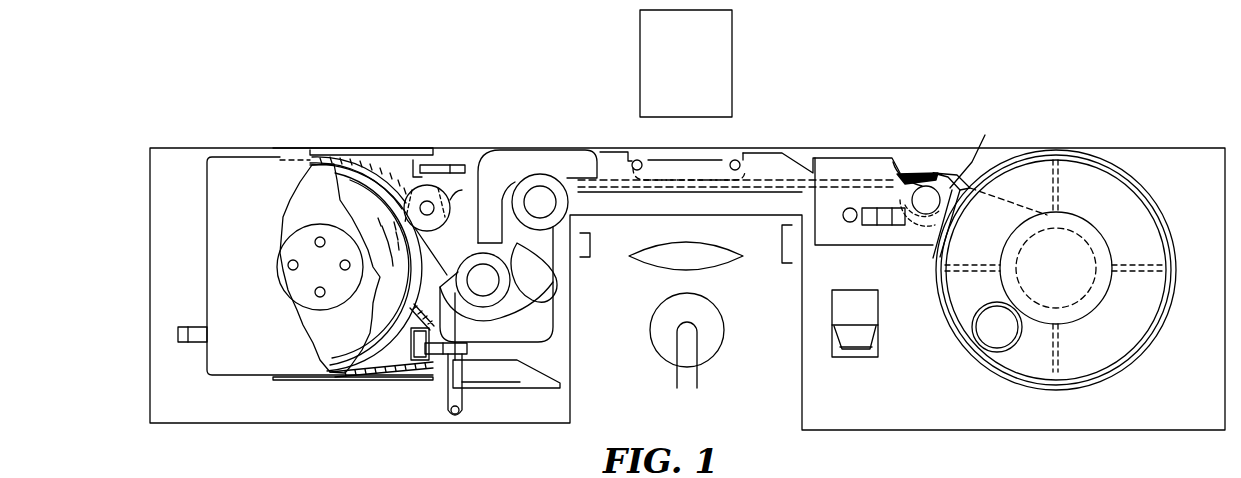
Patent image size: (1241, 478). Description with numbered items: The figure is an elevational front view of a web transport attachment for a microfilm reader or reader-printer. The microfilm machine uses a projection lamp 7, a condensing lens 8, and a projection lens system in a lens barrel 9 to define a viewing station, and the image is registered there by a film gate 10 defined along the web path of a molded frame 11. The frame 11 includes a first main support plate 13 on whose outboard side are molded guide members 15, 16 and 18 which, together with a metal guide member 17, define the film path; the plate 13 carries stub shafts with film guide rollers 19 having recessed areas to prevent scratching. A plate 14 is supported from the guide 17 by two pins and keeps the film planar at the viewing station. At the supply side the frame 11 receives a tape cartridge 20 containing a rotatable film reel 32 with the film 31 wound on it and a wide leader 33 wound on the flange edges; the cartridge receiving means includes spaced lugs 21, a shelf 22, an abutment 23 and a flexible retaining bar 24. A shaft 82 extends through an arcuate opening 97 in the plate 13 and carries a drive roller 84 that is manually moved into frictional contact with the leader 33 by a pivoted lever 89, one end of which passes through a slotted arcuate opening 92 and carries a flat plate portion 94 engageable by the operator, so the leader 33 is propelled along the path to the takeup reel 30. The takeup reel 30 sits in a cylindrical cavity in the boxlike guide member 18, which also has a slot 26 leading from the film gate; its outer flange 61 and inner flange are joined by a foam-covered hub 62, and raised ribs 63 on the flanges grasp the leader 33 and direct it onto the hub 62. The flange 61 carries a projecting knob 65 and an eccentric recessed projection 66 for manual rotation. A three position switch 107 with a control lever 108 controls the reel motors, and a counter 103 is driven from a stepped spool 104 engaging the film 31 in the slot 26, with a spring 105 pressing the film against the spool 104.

The projection lamp 7 is at (722, 343).
The condensing lens 8 is at (720, 268).
The lens barrel 9 is at (733, 57).
The film gate 10 is at (717, 187).
The molded frame 11 is at (1143, 149).
The first main support plate 13 is at (1200, 155).
The plate 14 is at (650, 160).
The guide member 15 is at (548, 317).
The guide member 16 is at (510, 157).
The metal guide member 17 is at (770, 153).
The boxlike guide member 18 is at (981, 160).
The film guide rollers 19 is at (540, 175).
The tape cartridge 20 is at (260, 355).
The spaced lugs 21 is at (443, 163).
The shelf 22 is at (290, 380).
The abutment 23 is at (183, 343).
The flexible retaining bar 24 is at (305, 150).
The slot 26 is at (948, 177).
The takeup reel 30 is at (1125, 332).
The film 31 is at (378, 282).
The film reel 32 is at (340, 337).
The leader 33 is at (430, 270).
The outer flange 61 is at (1112, 348).
The hub 62 is at (1080, 305).
The raised ribs 63 is at (1062, 190).
The projecting knob 65 is at (1110, 293).
The eccentrically positioned projection 66 is at (1005, 350).
The shaft 82 is at (426, 206).
The drive roller 84 is at (449, 208).
The lever 89 is at (543, 378).
The slotted arcuate opening 92 is at (453, 416).
The flat plate portion 94 is at (494, 390).
The arcuate opening 97 is at (464, 188).
The counter 103 is at (845, 238).
The spool 104 is at (933, 198).
The spring 105 is at (912, 180).
The three position switch 107 is at (870, 313).
The control lever 108 is at (870, 338).